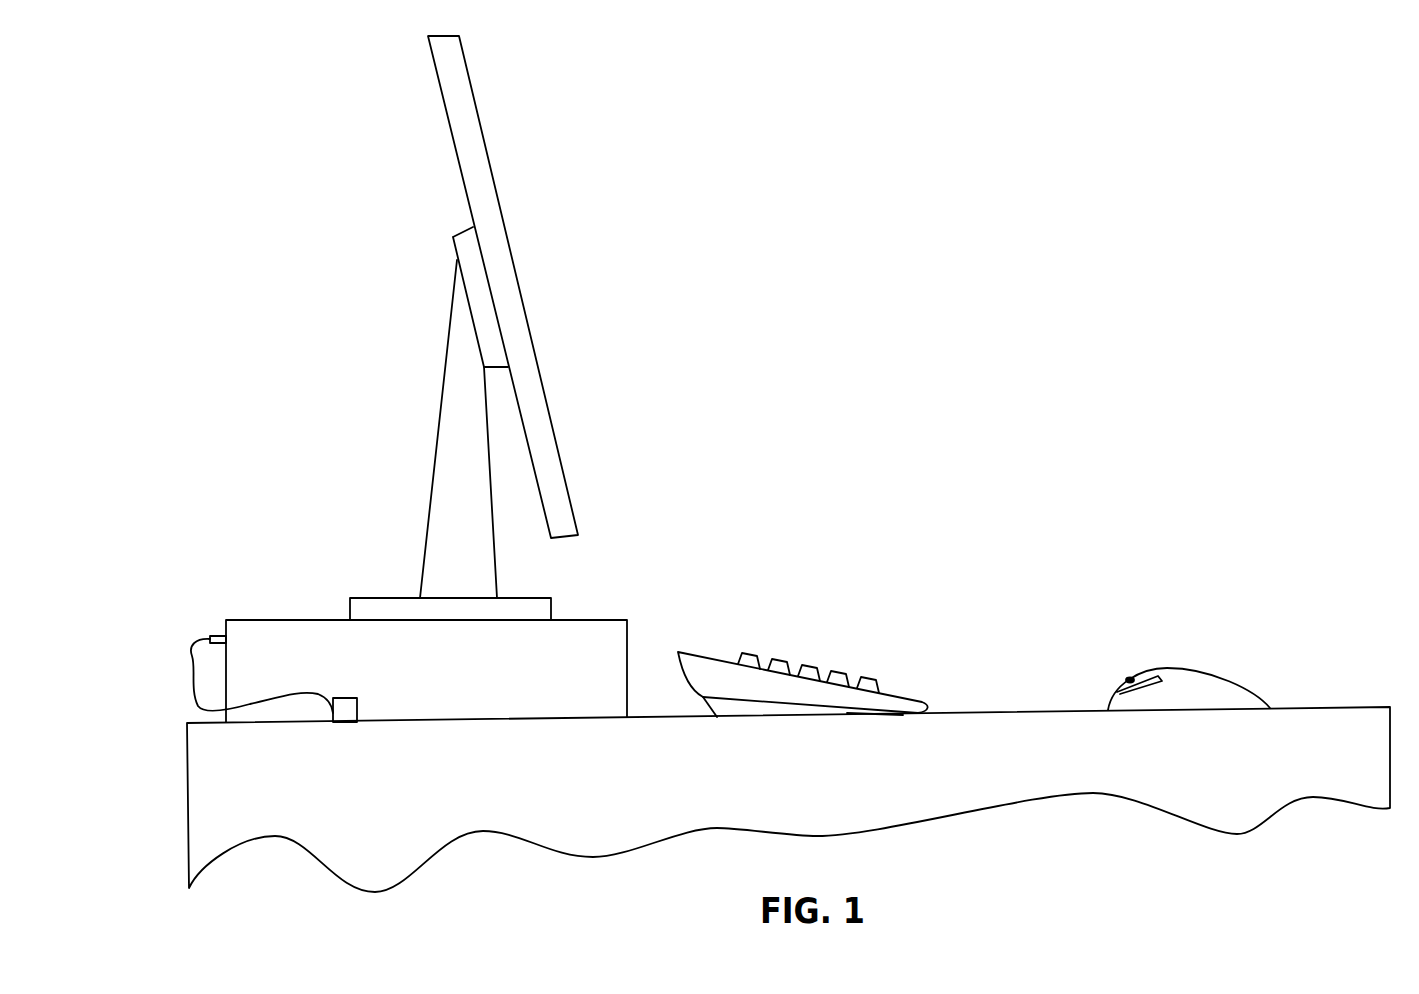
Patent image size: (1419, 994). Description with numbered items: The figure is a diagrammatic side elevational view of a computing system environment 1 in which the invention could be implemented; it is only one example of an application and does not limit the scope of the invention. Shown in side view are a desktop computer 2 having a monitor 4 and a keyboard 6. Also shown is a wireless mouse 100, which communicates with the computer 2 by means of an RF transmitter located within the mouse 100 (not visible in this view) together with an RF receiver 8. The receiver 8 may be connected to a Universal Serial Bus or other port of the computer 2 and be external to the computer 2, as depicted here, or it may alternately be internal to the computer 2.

The computing system environment 1 is at (848, 250).
The desktop computer 2 is at (607, 617).
The monitor 4 is at (508, 237).
The keyboard 6 is at (893, 693).
The RF receiver 8 is at (333, 700).
The wireless mouse 100 is at (1182, 668).